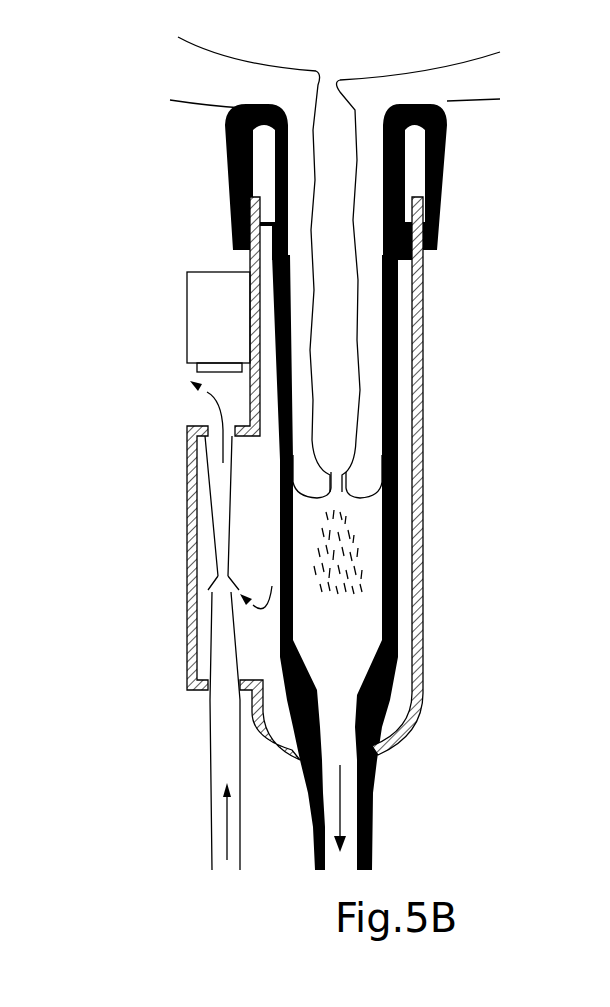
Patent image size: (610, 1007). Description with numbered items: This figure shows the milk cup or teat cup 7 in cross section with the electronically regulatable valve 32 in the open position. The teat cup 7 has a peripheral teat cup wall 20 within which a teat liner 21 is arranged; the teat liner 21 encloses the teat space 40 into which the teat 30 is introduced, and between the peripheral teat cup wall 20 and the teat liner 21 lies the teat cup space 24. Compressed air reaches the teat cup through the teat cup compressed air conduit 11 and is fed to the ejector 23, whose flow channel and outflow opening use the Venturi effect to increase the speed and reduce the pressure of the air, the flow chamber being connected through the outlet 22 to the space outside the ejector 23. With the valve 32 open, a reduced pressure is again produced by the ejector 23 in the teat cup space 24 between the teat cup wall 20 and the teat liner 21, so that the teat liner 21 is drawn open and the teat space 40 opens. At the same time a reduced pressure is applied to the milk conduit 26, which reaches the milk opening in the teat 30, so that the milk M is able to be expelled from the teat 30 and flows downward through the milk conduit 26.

The teat cup 7 is at (185, 170).
The teat 30 is at (377, 180).
The teat liner 21 is at (400, 277).
The peripheral teat cup wall 20 is at (425, 318).
The teat cup space 24 is at (405, 373).
The electronically regulatable valve 32 is at (208, 320).
The outlet 22 is at (217, 417).
The ejector 23 is at (196, 562).
The milk M is at (347, 558).
The teat space 40 is at (360, 647).
The teat cup compressed air conduit 11 is at (225, 755).
The milk conduit 26 is at (373, 817).